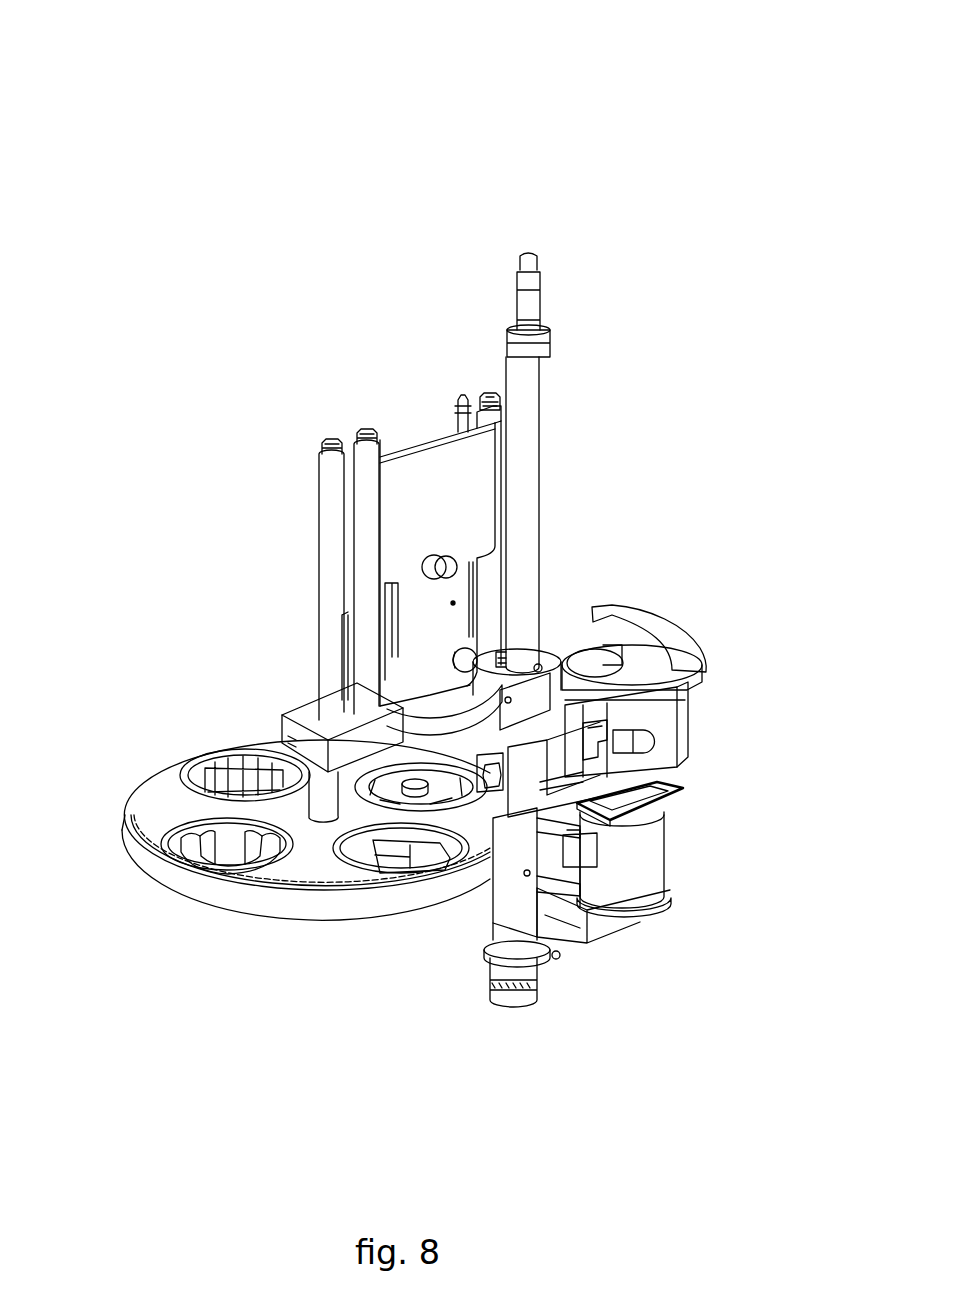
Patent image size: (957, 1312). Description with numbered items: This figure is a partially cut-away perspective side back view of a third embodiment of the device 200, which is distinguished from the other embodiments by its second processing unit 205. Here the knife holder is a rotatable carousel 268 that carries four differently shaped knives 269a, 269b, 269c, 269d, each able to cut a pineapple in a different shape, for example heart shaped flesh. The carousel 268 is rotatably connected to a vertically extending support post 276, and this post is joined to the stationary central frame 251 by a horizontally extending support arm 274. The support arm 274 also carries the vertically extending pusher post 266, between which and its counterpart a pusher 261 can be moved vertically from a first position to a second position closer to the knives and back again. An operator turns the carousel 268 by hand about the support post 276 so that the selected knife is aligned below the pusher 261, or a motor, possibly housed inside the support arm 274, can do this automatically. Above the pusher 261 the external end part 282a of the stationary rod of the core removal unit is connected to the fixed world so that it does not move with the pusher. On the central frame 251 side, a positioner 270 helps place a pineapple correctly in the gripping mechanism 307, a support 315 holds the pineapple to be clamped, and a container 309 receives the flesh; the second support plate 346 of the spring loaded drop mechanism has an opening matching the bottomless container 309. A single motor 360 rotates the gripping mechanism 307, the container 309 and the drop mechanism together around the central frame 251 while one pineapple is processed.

The device 200 is at (653, 57).
The second processing unit 205 is at (157, 744).
The central frame 251 is at (523, 501).
The pusher 261 is at (421, 401).
The pusher post 266 is at (364, 455).
The rotatable carousel 268 is at (155, 806).
The knife 269a is at (180, 862).
The knife 269b is at (438, 870).
The knife 269c is at (378, 800).
The knife 269d is at (246, 773).
The positioner 270 is at (697, 626).
The support arm 274 is at (304, 716).
The support post 276 is at (326, 543).
The external end part of the stationary rod 282a is at (463, 400).
The gripping mechanism 307 is at (665, 741).
The container 309 is at (655, 860).
The support 315 is at (673, 786).
The second support plate 346 is at (584, 925).
The motor 360 is at (560, 758).